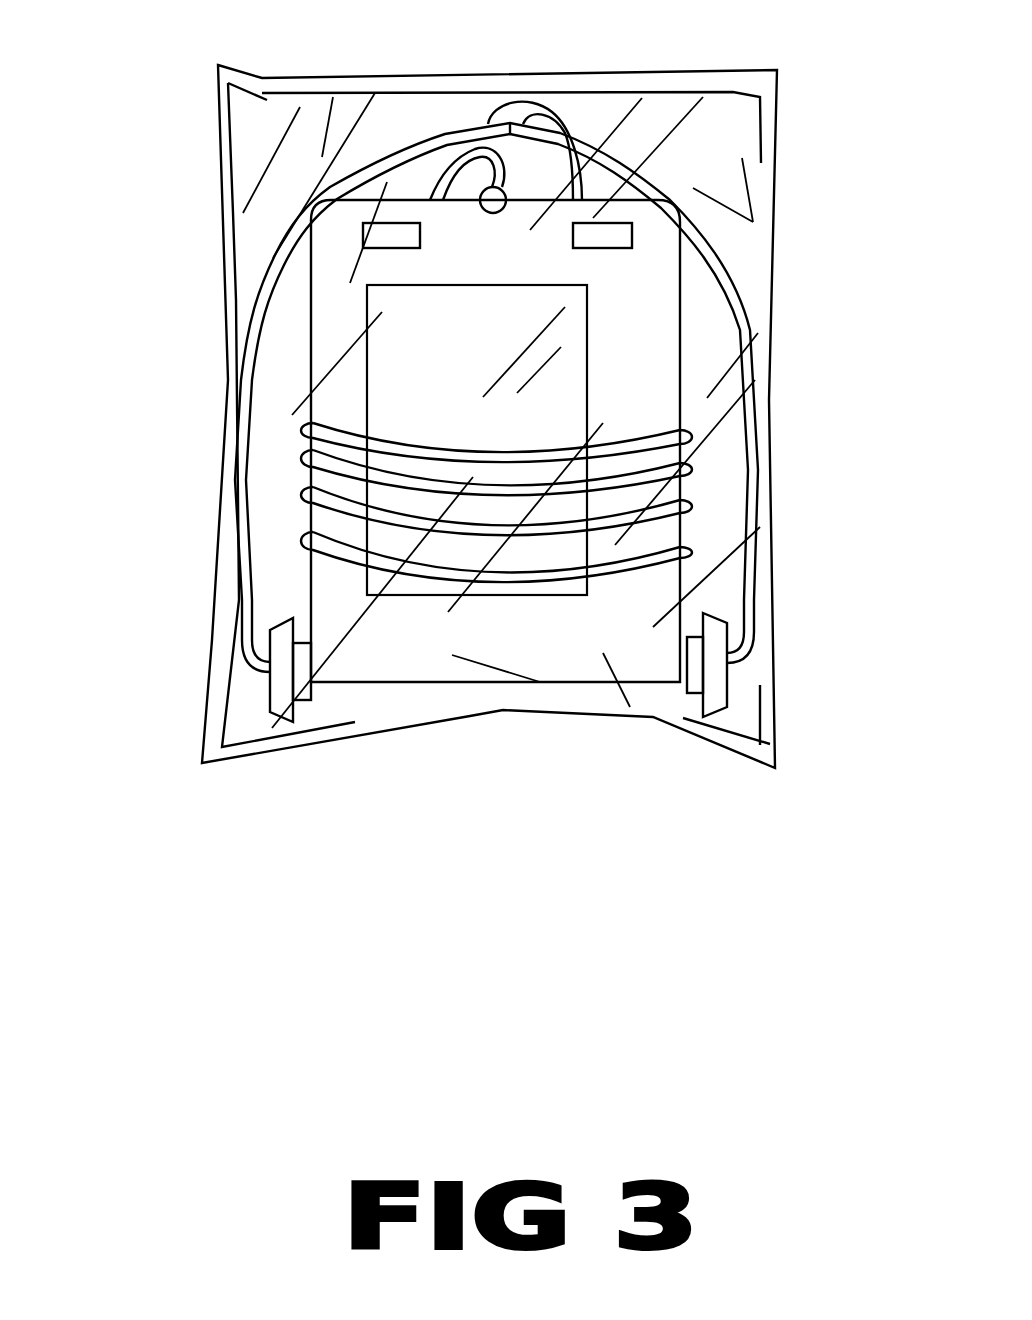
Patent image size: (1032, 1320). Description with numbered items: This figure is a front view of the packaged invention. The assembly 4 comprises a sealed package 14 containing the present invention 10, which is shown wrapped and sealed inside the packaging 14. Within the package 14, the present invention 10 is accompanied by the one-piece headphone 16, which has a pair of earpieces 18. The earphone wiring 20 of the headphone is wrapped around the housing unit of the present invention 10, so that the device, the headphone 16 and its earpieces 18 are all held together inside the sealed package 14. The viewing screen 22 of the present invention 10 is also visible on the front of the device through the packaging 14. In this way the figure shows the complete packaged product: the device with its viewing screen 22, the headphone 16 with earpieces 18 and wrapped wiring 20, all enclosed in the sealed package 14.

The packaged device assembly 4 is at (186, 444).
The present invention 10 is at (680, 362).
The sealed package 14 is at (713, 78).
The one-piece headphone 16 is at (720, 260).
The earpieces 18 is at (300, 683).
The earphone wiring 20 is at (687, 450).
The viewing screen 22 is at (412, 385).